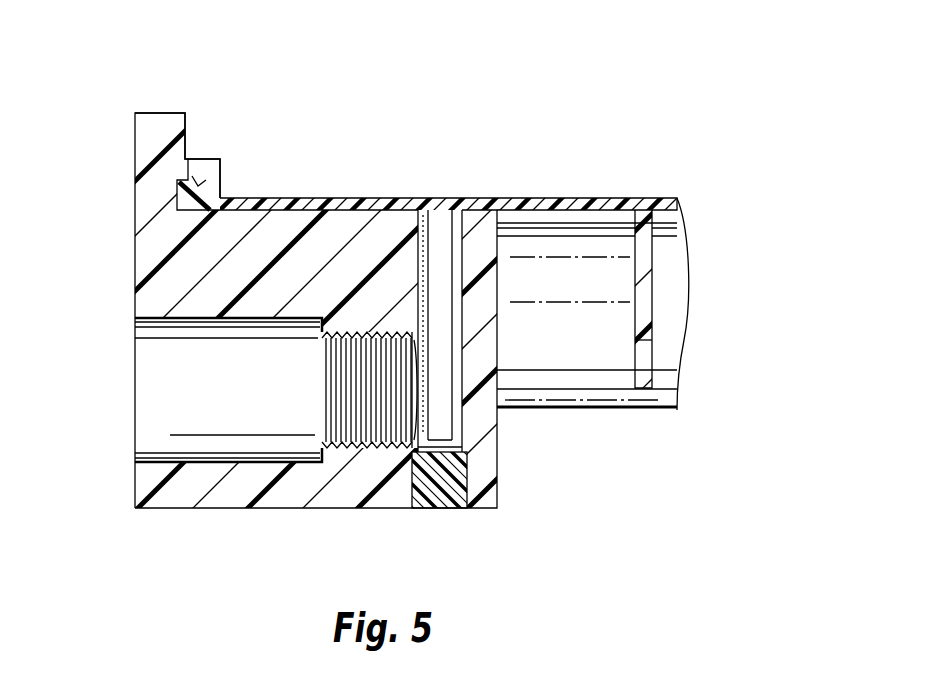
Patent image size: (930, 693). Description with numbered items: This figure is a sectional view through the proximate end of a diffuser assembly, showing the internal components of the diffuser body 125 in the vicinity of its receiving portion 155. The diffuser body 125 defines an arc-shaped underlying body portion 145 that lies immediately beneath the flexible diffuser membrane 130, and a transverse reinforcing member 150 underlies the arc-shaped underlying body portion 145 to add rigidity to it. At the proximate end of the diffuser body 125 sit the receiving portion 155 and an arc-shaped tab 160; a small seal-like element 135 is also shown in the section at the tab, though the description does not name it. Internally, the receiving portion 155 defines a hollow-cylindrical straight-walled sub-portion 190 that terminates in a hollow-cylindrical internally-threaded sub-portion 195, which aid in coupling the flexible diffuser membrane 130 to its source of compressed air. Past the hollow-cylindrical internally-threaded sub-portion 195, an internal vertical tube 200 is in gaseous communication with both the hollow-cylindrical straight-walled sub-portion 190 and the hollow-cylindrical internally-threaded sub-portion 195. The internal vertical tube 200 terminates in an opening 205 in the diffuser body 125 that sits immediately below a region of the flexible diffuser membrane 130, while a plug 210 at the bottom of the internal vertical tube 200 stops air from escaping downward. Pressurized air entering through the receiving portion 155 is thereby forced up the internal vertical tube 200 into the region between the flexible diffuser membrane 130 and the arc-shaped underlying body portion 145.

The diffuser body 125 is at (126, 250).
The flexible diffuser membrane 130 is at (584, 196).
The seal 135 is at (202, 184).
The arc-shaped underlying body portion 145 is at (680, 210).
The transverse reinforcing member 150 is at (640, 350).
The receiving portion 155 is at (128, 392).
The arc-shaped tab 160 is at (160, 112).
The hollow-cylindrical straight-walled sub-portion 190 is at (228, 425).
The hollow-cylindrical internally-threaded sub-portion 195 is at (357, 425).
The internal vertical tube 200 is at (460, 437).
The opening 205 is at (450, 197).
The plug 210 is at (438, 509).